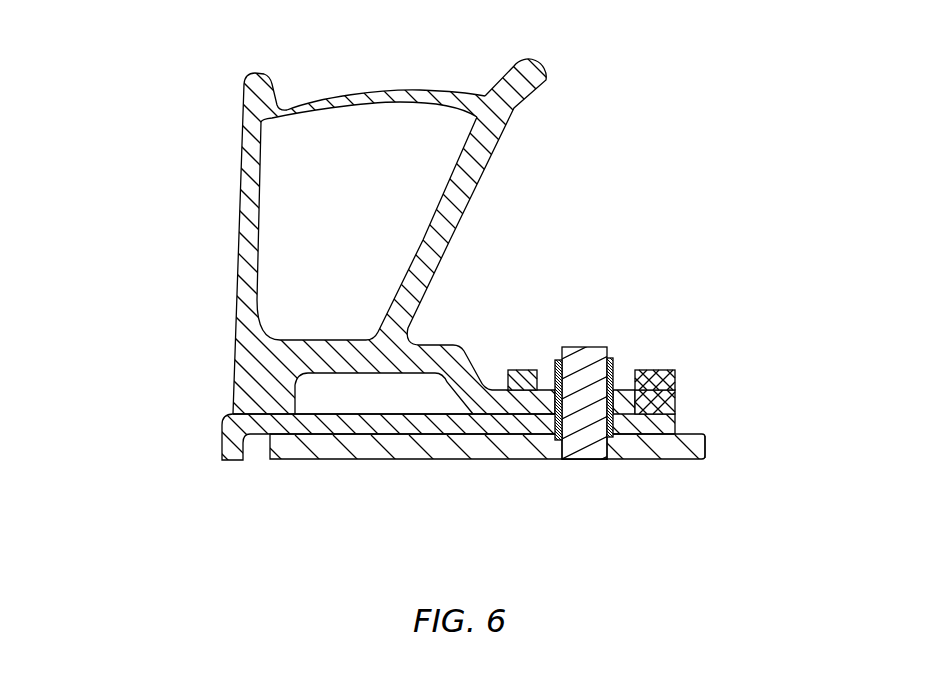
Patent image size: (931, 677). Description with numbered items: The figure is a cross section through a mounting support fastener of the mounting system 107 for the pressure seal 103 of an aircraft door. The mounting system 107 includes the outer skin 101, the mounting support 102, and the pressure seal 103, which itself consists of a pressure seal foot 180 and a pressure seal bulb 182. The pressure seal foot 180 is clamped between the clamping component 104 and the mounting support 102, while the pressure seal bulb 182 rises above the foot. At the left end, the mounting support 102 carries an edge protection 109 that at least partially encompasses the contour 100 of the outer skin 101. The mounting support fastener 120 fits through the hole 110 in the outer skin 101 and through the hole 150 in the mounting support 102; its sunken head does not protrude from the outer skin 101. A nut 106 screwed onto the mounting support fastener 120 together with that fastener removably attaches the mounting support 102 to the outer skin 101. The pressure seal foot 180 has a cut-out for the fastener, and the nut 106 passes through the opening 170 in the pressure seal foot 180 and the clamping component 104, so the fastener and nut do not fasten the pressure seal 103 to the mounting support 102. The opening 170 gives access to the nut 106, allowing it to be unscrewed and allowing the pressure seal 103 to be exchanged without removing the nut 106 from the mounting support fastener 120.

The contour 100 is at (267, 450).
The outer skin 101 is at (705, 442).
The mounting support 102 is at (672, 426).
The pressure seal 103 is at (527, 75).
The clamping component 104 is at (660, 378).
The nut 106 is at (615, 365).
The mounting system 107 is at (192, 126).
The edge protection 109 is at (227, 427).
The hole 110 is at (612, 437).
The mounting support fastener 120 is at (583, 445).
The hole 150 is at (560, 420).
The opening 170 is at (538, 378).
The pressure seal foot 180 is at (658, 405).
The pressure seal bulb 182 is at (242, 242).